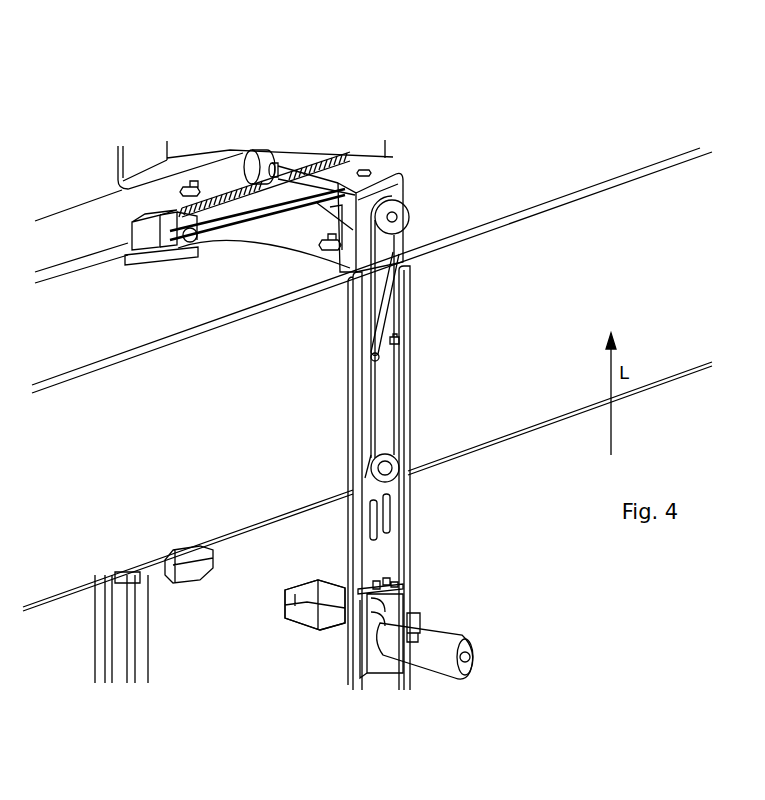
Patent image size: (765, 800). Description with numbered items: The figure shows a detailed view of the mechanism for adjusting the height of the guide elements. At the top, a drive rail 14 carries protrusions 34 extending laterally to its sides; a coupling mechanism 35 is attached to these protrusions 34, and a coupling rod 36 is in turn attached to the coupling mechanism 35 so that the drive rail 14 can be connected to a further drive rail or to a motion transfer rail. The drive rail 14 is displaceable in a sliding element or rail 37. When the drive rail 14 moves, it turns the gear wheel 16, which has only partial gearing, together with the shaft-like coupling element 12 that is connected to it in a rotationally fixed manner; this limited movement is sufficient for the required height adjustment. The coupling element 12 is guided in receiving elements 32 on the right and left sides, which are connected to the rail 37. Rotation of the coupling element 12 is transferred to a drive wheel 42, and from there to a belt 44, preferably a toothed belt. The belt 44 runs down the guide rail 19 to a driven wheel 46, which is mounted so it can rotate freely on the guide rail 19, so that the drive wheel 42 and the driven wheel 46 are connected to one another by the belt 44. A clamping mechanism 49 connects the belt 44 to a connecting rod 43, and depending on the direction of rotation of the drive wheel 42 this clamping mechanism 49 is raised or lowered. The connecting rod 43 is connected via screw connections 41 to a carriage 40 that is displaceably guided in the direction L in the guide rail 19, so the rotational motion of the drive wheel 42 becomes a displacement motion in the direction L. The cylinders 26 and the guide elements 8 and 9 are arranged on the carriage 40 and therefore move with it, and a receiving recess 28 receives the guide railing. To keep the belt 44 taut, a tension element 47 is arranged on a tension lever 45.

The guide element 8 is at (298, 620).
The guide element 9 is at (167, 580).
The coupling element 12 is at (219, 158).
The drive rail 14 is at (310, 158).
The gear wheel 16 is at (262, 153).
The guide rail 19 is at (408, 293).
The cylinder 26 is at (442, 642).
The receiving recess 28 is at (196, 567).
The receiving element 32 is at (372, 198).
The protrusion 34 is at (172, 258).
The coupling mechanism 35 is at (140, 266).
The coupling rod 36 is at (103, 255).
The rail 37 is at (122, 242).
The carriage 40 is at (400, 598).
The screw connection 41 is at (403, 590).
The drive wheel 42 is at (402, 206).
The connecting rod 43 is at (410, 380).
The belt 44 is at (372, 262).
The tension lever 45 is at (404, 270).
The driven wheel 46 is at (387, 449).
The tension element 47 is at (371, 356).
The clamping mechanism 49 is at (399, 339).